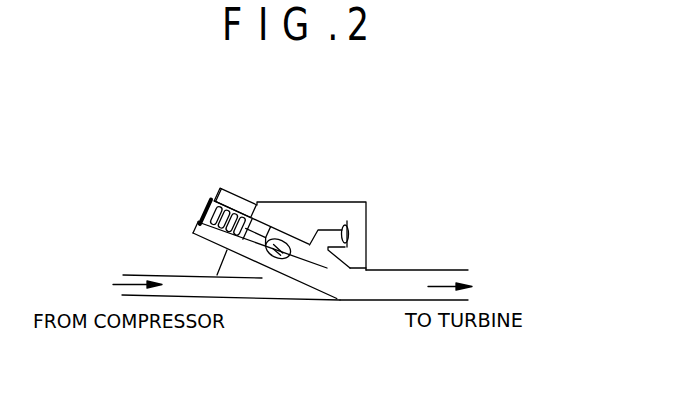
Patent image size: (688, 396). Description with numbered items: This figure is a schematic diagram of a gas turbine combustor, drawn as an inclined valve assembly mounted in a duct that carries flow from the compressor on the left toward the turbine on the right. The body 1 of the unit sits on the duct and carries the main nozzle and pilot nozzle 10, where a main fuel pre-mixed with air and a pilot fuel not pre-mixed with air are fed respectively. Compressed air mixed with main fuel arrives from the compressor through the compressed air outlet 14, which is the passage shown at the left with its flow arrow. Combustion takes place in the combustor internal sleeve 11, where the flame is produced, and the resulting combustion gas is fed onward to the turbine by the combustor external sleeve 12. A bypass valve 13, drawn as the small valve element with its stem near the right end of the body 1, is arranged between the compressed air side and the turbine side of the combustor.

The bypass valve body 1 is at (353, 213).
The main nozzle and pilot nozzle 10 is at (220, 205).
The combustor internal sleeve 11 is at (260, 202).
The combustor external sleeve 12 is at (327, 268).
The bypass valve 13 is at (350, 234).
The compressed air outlet 14 is at (151, 277).